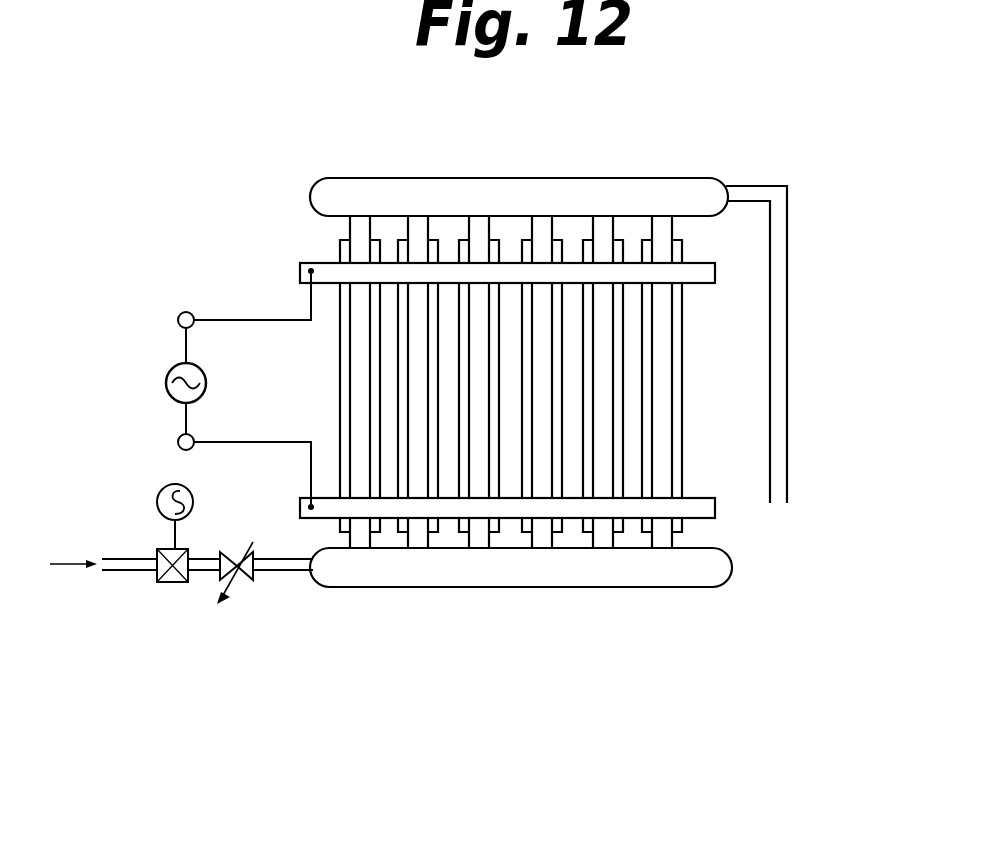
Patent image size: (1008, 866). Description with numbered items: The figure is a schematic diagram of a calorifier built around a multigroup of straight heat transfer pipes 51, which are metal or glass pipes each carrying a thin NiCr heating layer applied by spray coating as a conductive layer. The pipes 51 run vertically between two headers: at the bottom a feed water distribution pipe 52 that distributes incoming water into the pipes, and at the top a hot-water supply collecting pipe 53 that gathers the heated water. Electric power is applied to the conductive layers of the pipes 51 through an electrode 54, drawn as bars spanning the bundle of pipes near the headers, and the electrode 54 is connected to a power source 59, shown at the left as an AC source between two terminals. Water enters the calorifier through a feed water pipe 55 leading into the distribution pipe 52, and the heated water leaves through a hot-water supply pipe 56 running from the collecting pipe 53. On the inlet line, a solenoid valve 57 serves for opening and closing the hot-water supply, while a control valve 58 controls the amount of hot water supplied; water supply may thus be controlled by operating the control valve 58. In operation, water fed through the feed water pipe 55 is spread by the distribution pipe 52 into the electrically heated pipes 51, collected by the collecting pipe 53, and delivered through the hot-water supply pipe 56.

The heat transfer pipes 51 is at (687, 468).
The feed water distribution pipe 52 is at (592, 588).
The hot-water supply collecting pipe 53 is at (575, 177).
The electrode 54 is at (322, 271).
The feed water pipe 55 is at (128, 573).
The hot-water supply pipe 56 is at (780, 372).
The solenoid valve 57 is at (193, 500).
The control valve 58 is at (257, 583).
The power source 59 is at (206, 379).